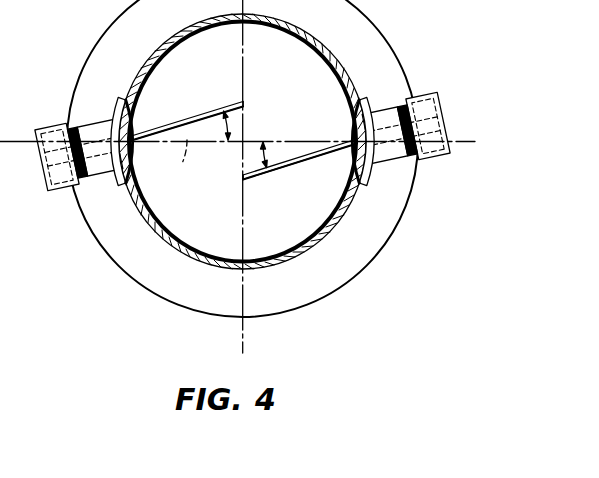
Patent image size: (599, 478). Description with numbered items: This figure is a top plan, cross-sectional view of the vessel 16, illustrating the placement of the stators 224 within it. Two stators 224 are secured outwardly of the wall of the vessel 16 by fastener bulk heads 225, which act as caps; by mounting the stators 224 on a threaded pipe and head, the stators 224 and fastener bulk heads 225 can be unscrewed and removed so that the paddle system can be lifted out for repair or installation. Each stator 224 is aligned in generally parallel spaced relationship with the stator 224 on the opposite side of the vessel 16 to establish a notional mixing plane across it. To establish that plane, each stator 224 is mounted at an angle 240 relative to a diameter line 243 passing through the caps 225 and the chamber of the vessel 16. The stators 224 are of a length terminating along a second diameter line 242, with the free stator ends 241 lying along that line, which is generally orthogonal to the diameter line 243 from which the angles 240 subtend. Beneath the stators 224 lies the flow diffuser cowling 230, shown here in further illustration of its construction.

The vessel 16 is at (343, 59).
The stator 224 is at (203, 111).
The fastener bulk head 225 is at (48, 182).
The flow diffuser cowling 230 is at (167, 302).
The angle 240 is at (241, 160).
The plate free edge 241 is at (245, 103).
The diameter line 242 is at (244, 226).
The diameter line 243 is at (182, 165).